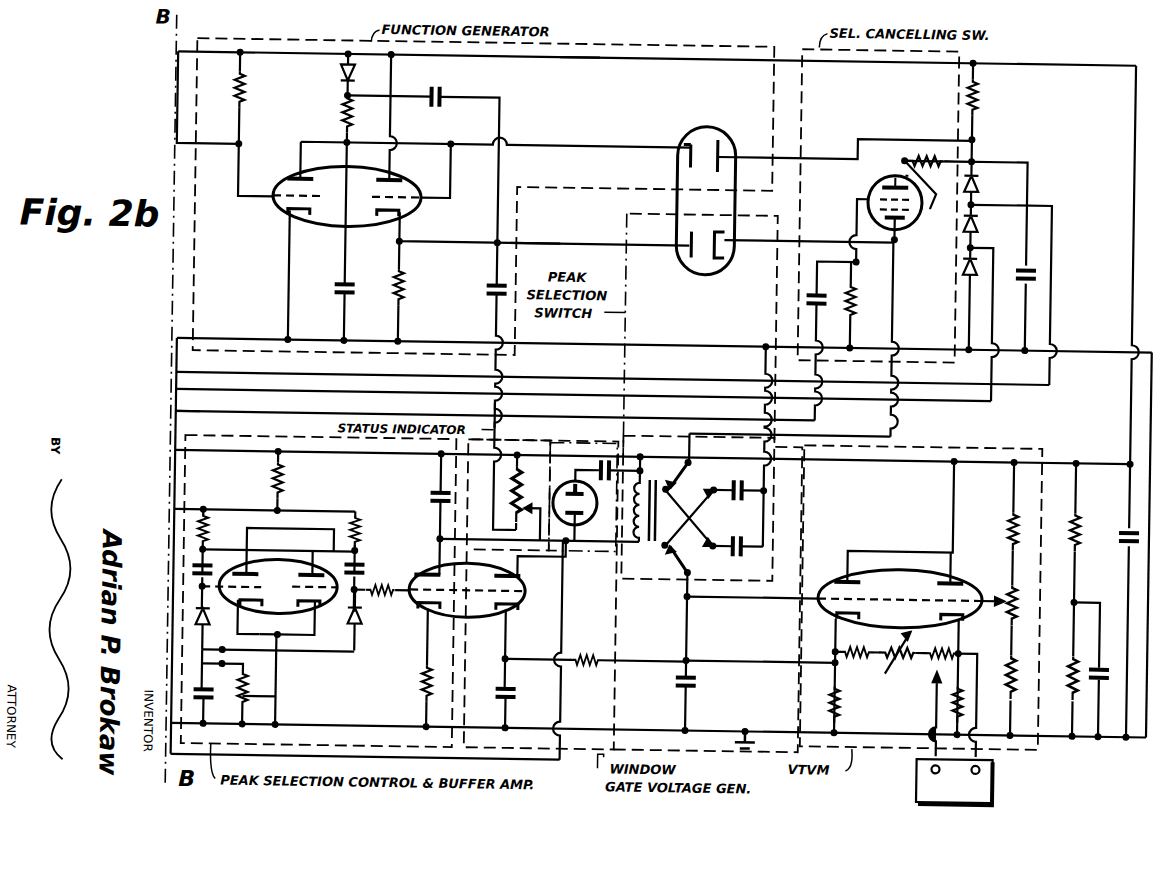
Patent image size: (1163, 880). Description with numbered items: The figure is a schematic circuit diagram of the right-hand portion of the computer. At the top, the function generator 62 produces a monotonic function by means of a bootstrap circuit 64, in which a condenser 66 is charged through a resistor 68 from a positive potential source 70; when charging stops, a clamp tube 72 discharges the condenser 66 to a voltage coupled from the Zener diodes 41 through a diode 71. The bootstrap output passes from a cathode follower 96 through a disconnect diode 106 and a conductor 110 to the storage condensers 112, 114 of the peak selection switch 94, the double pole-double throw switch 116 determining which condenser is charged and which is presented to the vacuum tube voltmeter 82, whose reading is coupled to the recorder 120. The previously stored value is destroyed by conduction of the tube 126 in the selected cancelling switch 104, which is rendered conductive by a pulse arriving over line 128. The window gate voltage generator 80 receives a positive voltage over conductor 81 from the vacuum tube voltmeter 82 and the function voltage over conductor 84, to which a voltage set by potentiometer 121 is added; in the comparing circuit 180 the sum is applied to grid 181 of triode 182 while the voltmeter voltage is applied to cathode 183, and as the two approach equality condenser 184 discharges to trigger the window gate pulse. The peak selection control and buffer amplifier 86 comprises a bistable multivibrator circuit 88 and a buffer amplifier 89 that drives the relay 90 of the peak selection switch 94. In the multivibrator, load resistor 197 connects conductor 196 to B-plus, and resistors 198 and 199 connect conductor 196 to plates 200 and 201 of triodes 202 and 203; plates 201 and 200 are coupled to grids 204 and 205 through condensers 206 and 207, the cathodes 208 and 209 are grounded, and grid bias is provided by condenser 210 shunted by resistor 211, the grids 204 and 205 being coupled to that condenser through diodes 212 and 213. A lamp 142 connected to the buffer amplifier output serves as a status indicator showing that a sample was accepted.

The Zener diodes 41 is at (978, 262).
The function generator 62 is at (245, 48).
The bootstrap circuit 64 is at (370, 270).
The condenser 66 is at (338, 287).
The resistor 68 is at (333, 119).
The positive potential source 70 is at (575, 59).
The diode 71 is at (710, 129).
The clamp tube 72 is at (271, 220).
The window gate voltage generator 80 is at (618, 712).
The conductor 81 is at (736, 659).
The vacuum tube voltmeter 82 is at (902, 697).
The conductor 84 is at (498, 419).
The peak selection control and buffer amplifier 86 is at (366, 704).
The multivibrator circuit 88 is at (345, 647).
The buffer amplifier 89 is at (414, 647).
The relay 90 is at (651, 547).
The peak selection switch 94 is at (625, 224).
The cathode follower 96 is at (413, 216).
The selected cancelling switch 104 is at (796, 48).
The disconnect diode 106 is at (703, 269).
The conductor 110 is at (523, 244).
The condenser 112 is at (721, 557).
The condenser 114 is at (738, 507).
The double pole-double throw switch 116 is at (689, 463).
The recorder 120 is at (922, 789).
The potentiometer 121 is at (523, 478).
The tube 126 is at (865, 185).
The line 128 is at (176, 419).
The lamp 142 is at (576, 527).
The comparing circuit 180 is at (607, 622).
The grid 181 is at (522, 607).
The triode 182 is at (516, 615).
The cathode 183 is at (500, 614).
The condenser 184 is at (517, 695).
The conductor 196 is at (203, 517).
The load resistor 197 is at (284, 466).
The resistor 198 is at (209, 538).
The resistor 199 is at (358, 540).
The plate 200 is at (290, 552).
The plate 201 is at (268, 539).
The triode 202 is at (294, 622).
The triode 203 is at (258, 636).
The grid 204 is at (360, 594).
The grid 205 is at (257, 598).
The condenser 206 is at (360, 570).
The condenser 207 is at (197, 576).
The cathode 208 is at (360, 611).
The cathode 209 is at (257, 627).
The condenser 210 is at (200, 694).
The resistor 211 is at (272, 700).
The diode 212 is at (366, 624).
The diode 213 is at (199, 622).